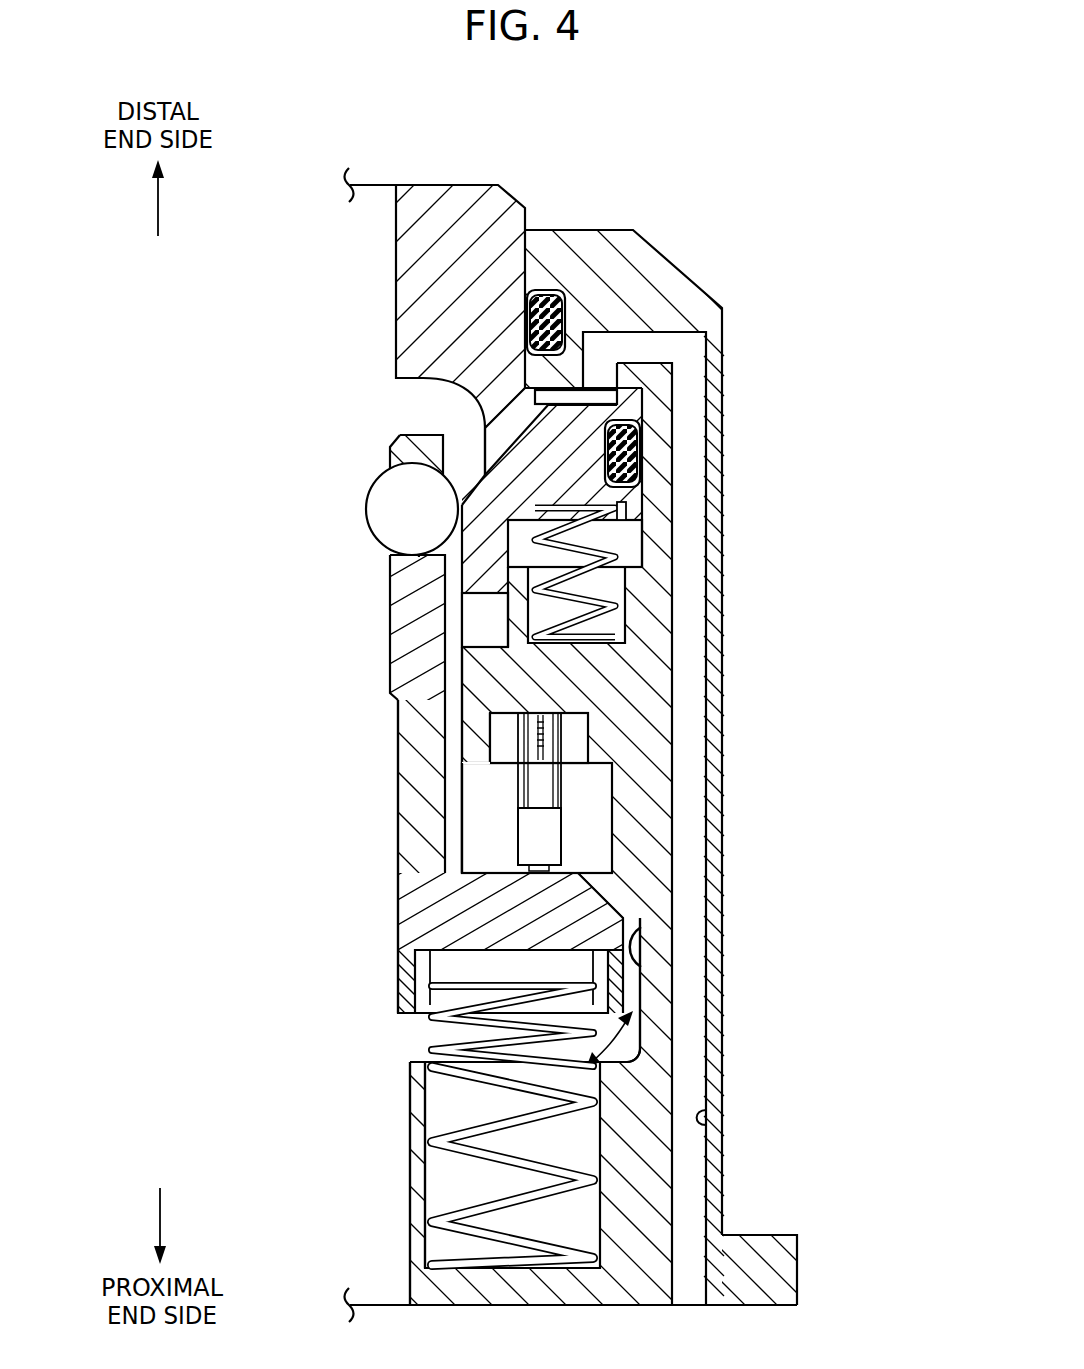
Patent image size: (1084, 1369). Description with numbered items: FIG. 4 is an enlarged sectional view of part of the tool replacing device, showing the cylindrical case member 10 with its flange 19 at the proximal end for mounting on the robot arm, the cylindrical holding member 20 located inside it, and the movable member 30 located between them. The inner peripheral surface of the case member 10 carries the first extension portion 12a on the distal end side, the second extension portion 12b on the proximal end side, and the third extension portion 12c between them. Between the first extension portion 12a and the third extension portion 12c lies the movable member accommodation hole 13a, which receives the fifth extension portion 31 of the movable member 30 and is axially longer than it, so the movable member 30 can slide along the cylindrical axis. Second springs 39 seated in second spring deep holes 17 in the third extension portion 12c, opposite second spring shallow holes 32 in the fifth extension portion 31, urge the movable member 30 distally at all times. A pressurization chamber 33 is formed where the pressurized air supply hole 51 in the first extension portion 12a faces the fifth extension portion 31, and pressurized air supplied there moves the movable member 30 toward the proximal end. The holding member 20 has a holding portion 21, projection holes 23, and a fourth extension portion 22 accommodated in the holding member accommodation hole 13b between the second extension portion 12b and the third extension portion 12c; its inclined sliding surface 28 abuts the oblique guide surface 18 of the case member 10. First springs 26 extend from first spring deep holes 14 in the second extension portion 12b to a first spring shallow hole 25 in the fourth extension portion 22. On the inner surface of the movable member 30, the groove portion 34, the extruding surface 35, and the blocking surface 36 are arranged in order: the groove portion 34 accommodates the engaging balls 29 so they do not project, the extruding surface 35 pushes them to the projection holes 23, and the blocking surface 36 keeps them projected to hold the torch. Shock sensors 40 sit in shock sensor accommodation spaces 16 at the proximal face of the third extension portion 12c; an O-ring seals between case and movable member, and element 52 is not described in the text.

The case member 10 is at (715, 342).
The first extension portion 12a is at (540, 275).
The second extension portion 12b is at (418, 1170).
The third extension portion 12c is at (460, 712).
The movable member accommodation hole 13a is at (622, 530).
The holding member accommodation hole 13b is at (600, 1048).
The first spring deep hole 14 is at (642, 1045).
The shock sensor accommodation space 16 is at (596, 782).
The second spring deep hole 17 is at (600, 612).
The guide surface 18 is at (627, 988).
The flange 19 is at (787, 1262).
The holding member 20 is at (342, 832).
The holding portion 21 is at (400, 678).
The fourth extension portion 22 is at (527, 917).
The projection hole 23 is at (420, 535).
The first spring shallow hole 25 is at (430, 993).
The first spring 26 is at (430, 1200).
The sliding surface 28 is at (643, 943).
The engaging ball 29 is at (376, 505).
The movable member 30 is at (446, 190).
The fifth extension portion 31 is at (643, 457).
The second spring shallow hole 32 is at (626, 512).
The pressurization chamber 33 is at (604, 397).
The groove portion 34 is at (484, 430).
The extruding surface 35 is at (398, 453).
The blocking surface 36 is at (470, 579).
The second spring 39 is at (600, 580).
The shock sensor 40 is at (548, 823).
The pressurized air supply hole 51 is at (710, 1117).
The seal ring 52 is at (546, 318).